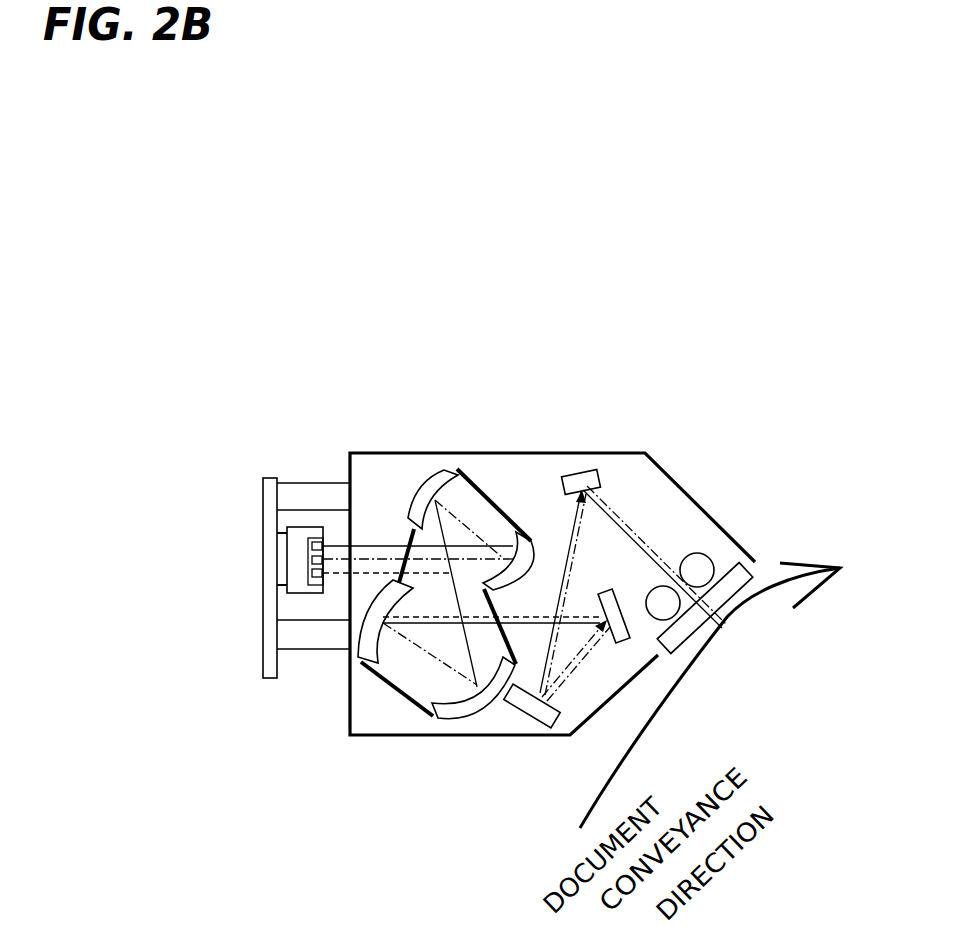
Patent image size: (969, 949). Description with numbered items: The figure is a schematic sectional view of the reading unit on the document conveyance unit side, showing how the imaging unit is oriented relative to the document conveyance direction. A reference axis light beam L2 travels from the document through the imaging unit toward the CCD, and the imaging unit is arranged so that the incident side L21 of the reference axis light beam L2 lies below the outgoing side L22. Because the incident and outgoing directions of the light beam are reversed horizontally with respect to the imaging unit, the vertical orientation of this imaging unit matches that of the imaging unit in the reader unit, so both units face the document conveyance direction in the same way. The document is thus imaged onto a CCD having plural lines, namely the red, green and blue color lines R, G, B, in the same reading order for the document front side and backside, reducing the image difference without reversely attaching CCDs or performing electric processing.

The outgoing side L22 is at (388, 543).
The incident side L21 is at (533, 615).
The reference axis light beam L2 is at (639, 528).
The red color line R is at (313, 544).
The green color line G is at (313, 560).
The blue color line B is at (313, 576).